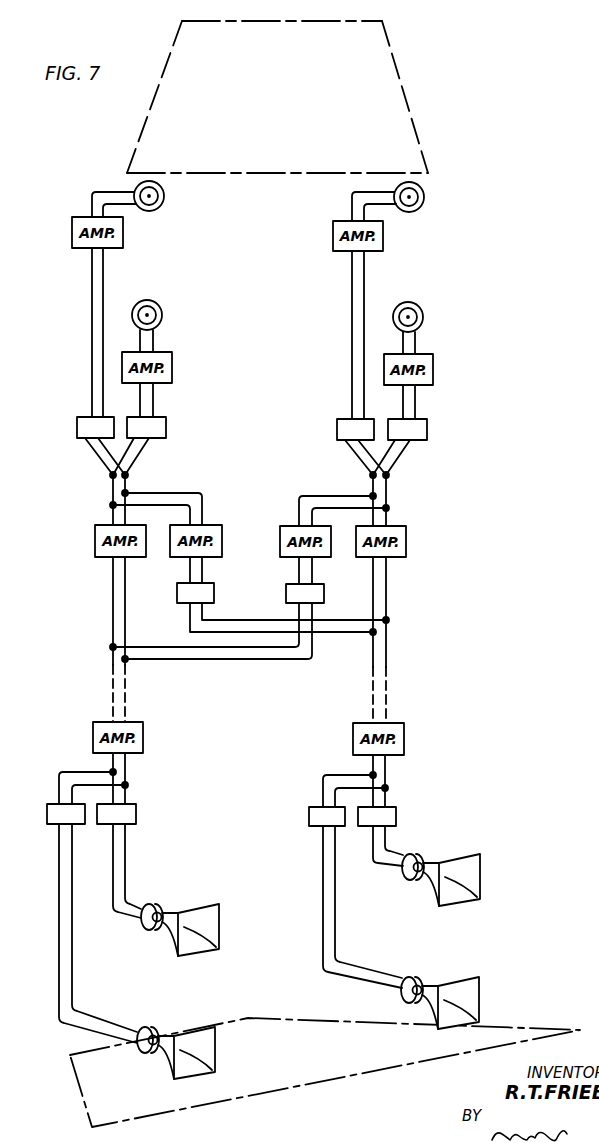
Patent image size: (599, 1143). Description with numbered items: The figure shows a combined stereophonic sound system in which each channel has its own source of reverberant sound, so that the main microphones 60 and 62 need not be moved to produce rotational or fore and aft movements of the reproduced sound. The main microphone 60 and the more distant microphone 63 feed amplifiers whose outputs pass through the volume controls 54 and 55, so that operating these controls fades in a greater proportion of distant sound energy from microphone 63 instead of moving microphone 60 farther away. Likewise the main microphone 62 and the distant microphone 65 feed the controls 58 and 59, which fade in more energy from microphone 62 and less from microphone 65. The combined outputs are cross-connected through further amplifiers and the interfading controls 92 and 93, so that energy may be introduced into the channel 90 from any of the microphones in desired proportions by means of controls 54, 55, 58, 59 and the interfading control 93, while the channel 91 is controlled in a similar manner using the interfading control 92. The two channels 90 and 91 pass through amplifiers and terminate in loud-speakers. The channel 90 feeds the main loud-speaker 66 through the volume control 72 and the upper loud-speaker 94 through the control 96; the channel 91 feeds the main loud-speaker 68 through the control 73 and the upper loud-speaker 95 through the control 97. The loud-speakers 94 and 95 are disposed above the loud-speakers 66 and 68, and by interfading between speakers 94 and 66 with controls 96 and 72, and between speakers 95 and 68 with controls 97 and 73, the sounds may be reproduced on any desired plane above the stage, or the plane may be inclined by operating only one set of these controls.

The volume control 54 is at (76, 428).
The volume control 55 is at (167, 428).
The volume control 58 is at (336, 430).
The volume control 59 is at (428, 430).
The main microphone 60 is at (165, 197).
The main microphone 62 is at (425, 198).
The microphone 63 is at (163, 316).
The microphone 65 is at (424, 318).
The main loud-speaker 66 is at (219, 917).
The main loud-speaker 68 is at (481, 885).
The volume control 72 is at (137, 815).
The volume control 73 is at (397, 817).
The channel 90 is at (113, 683).
The channel 91 is at (380, 686).
The interfading control 92 is at (177, 592).
The interfading control 93 is at (325, 593).
The loud-speaker 94 is at (216, 1048).
The loud-speaker 95 is at (480, 993).
The volume control 96 is at (46, 814).
The volume control 97 is at (308, 817).